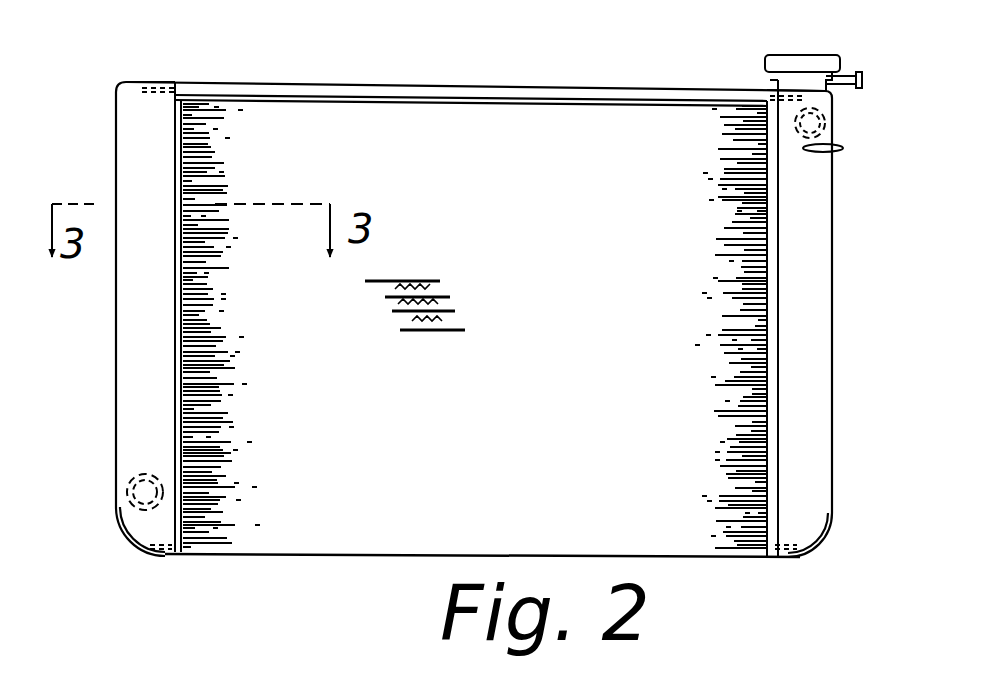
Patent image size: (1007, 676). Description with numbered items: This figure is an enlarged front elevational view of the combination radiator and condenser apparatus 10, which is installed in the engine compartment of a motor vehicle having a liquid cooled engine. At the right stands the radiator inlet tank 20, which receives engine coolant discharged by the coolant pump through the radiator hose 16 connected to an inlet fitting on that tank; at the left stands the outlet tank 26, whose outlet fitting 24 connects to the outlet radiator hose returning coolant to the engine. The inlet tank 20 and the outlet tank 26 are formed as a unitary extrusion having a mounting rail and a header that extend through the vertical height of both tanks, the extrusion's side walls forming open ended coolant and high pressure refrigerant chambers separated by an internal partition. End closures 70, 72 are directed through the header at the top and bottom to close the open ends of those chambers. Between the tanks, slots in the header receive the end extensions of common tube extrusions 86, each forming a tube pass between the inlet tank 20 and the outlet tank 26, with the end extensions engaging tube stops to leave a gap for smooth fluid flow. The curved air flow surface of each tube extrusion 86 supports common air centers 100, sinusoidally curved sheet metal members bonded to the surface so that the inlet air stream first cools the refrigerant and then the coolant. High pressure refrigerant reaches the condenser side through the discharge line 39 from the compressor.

The combination radiator and condenser apparatus 10 is at (587, 85).
The radiator hose 16 is at (826, 127).
The radiator inlet tank 20 is at (822, 246).
The outlet fitting 24 is at (133, 480).
The outlet tank 26 is at (118, 283).
The discharge line 39 is at (840, 152).
The end closure 70 is at (152, 86).
The end closure 72 is at (166, 558).
The tube extrusion 86 is at (233, 121).
The air centers 100 is at (198, 98).